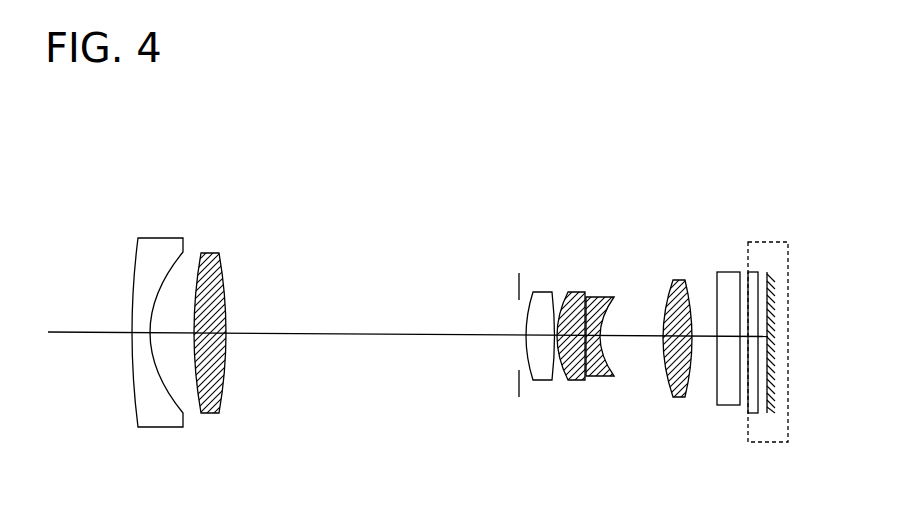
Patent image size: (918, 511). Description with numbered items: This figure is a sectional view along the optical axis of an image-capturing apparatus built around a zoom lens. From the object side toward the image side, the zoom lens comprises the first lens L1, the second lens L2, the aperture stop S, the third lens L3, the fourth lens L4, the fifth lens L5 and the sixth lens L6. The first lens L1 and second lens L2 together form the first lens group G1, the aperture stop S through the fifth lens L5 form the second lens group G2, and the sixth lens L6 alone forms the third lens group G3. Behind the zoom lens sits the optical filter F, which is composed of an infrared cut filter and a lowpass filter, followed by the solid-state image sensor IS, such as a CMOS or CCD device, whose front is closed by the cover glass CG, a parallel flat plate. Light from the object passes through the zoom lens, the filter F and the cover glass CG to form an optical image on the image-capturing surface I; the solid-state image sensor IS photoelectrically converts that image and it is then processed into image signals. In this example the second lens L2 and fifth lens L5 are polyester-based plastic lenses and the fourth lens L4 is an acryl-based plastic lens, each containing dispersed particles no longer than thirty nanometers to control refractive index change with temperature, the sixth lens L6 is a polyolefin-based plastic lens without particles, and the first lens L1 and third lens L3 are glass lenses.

The first lens group G1 is at (131, 185).
The second lens group G2 is at (506, 188).
The third lens group G3 is at (659, 190).
The first lens L1 is at (162, 238).
The second lens L2 is at (212, 252).
The third lens L3 is at (542, 291).
The fourth lens L4 is at (578, 292).
The fifth lens L5 is at (607, 297).
The sixth lens L6 is at (682, 280).
The aperture stop S is at (517, 287).
The optical filter F is at (722, 406).
The cover glass CG is at (747, 272).
The image-capturing surface I is at (767, 272).
The solid-state image sensor IS is at (773, 443).